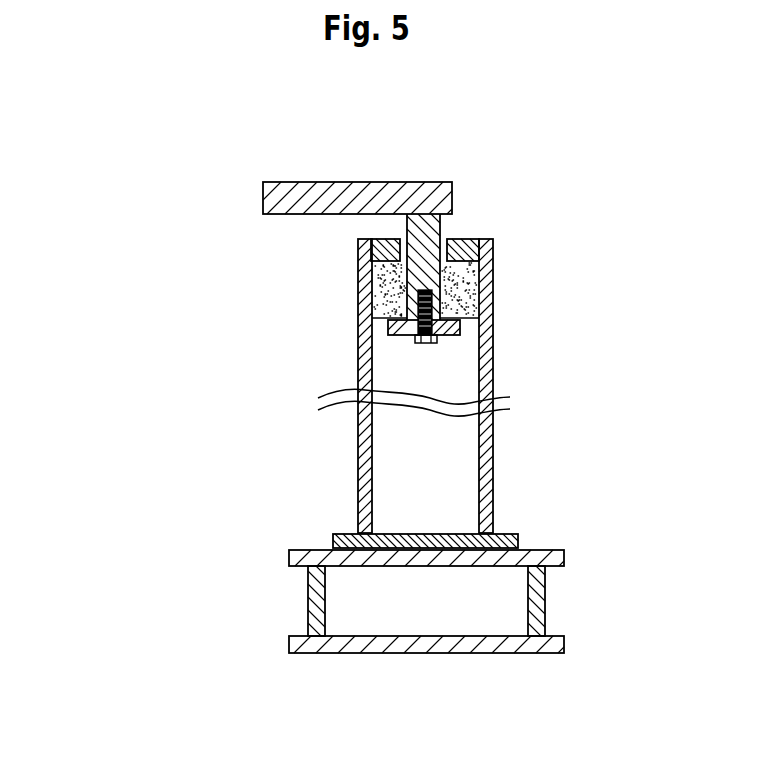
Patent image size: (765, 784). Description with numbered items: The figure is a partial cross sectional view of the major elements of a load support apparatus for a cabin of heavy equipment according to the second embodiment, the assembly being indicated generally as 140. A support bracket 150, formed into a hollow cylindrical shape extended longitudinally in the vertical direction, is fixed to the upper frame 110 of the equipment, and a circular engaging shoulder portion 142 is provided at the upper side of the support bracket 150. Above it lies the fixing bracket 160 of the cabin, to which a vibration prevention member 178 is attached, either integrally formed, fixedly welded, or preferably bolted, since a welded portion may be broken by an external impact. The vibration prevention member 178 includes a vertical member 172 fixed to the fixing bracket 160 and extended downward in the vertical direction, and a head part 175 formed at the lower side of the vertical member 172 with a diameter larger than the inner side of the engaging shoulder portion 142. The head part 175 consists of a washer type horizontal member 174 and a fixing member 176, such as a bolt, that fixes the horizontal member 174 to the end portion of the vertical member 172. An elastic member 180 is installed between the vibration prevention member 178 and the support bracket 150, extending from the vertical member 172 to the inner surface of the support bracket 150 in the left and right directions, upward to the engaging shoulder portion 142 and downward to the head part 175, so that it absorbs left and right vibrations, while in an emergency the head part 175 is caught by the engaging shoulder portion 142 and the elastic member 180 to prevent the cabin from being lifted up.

The upper frame 110 is at (540, 548).
The pressing unit 140 is at (242, 136).
The engaging shoulder portion 142 is at (470, 240).
The support bracket 150 is at (488, 342).
The fixing bracket 160 is at (263, 198).
The vertical member 172 is at (408, 282).
The horizontal member 174 is at (390, 321).
The head part 175 is at (262, 333).
The fixing member 176 is at (422, 346).
The vibration prevention member 178 is at (257, 285).
The elastic member 180 is at (465, 285).